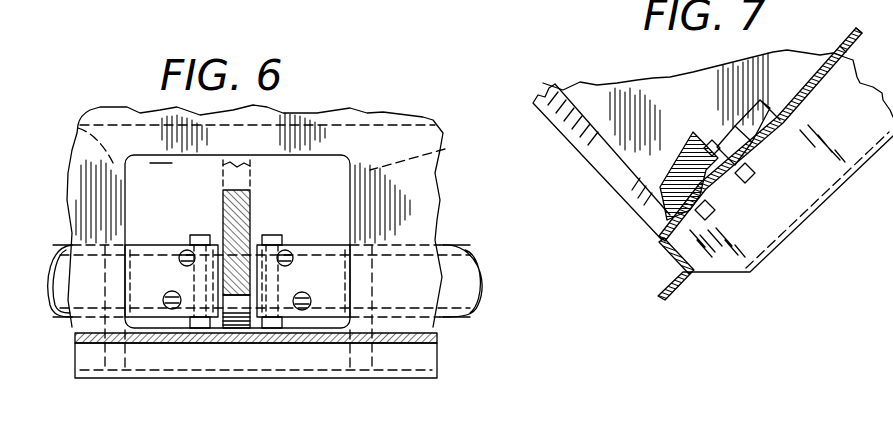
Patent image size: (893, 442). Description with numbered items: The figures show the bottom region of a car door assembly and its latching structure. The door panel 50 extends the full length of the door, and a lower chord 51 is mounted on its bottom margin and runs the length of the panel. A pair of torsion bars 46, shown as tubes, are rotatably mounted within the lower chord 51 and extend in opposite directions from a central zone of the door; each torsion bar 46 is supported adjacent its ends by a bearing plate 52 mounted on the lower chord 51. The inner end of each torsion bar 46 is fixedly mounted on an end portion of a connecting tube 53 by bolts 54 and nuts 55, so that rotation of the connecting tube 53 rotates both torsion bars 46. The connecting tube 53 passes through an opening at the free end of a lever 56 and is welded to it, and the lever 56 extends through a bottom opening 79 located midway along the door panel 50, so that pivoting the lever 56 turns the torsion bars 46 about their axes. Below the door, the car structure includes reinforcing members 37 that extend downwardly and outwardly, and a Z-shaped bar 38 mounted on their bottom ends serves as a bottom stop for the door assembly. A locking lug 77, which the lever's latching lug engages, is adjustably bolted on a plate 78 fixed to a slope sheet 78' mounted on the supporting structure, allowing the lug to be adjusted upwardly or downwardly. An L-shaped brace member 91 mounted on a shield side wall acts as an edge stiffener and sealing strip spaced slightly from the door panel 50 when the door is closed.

In FIG. 6, the door panel 50 is at (110, 125).
In FIG. 6, the bearing plate 52 is at (78, 128).
In FIG. 6, the bottom opening 79 is at (150, 163).
In FIG. 6, the lower chord 51 is at (283, 172).
In FIG. 6, the torsion bar 46 is at (460, 246).
In FIG. 6, the connecting tube 53 is at (158, 247).
In FIG. 6, the lever 56 is at (223, 200).
In FIG. 6, the bolts 54 is at (197, 235).
In FIG. 6, the nuts 55 is at (250, 325).
In FIG. 6, the Z-shaped bar 38 is at (322, 380).
In FIG. 7, the Z-shaped bar 38 is at (677, 293).
In FIG. 7, the L-shaped brace member 91 is at (583, 148).
In FIG. 7, the locking lug 77 is at (740, 127).
In FIG. 7, the plate 78 is at (760, 134).
In FIG. 7, the slope sheet 78' is at (837, 39).
In FIG. 7, the reinforcing member 37 is at (812, 212).